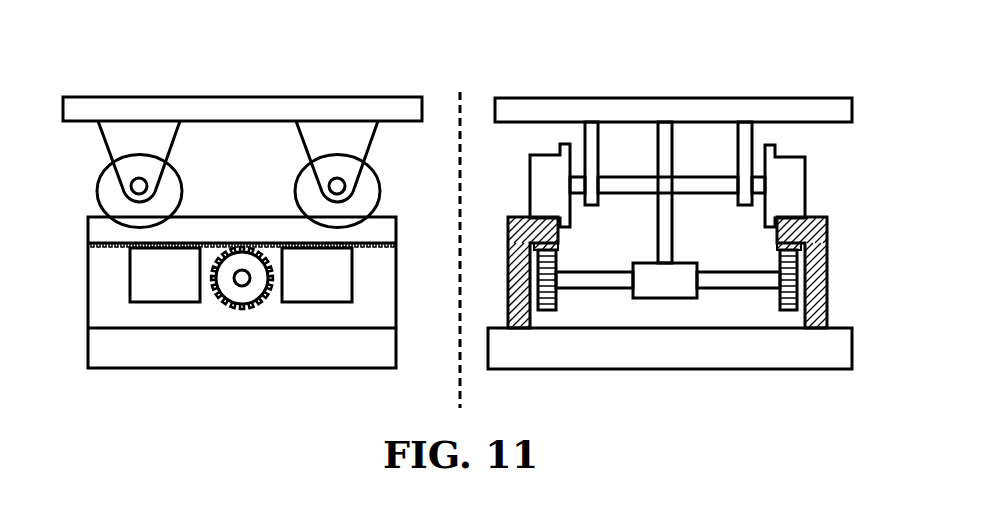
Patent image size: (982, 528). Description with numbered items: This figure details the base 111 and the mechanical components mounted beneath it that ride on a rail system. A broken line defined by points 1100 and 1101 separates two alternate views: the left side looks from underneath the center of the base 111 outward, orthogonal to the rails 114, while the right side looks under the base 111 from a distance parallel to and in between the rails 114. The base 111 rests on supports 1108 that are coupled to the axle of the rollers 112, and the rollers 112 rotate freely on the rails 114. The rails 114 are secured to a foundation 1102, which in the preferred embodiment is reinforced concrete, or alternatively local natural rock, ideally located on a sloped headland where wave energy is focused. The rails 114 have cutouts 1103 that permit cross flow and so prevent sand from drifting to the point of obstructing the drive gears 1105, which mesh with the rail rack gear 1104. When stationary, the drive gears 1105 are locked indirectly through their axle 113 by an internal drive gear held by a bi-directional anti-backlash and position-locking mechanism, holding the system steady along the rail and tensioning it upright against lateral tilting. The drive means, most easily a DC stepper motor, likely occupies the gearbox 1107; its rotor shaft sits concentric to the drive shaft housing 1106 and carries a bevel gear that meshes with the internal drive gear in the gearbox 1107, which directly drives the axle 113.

The base 111 is at (267, 98).
The broken line point 1101 is at (438, 239).
The broken line point 1100 is at (488, 408).
The supports 1108 is at (160, 151).
The rollers 112 is at (180, 168).
The rails 114 is at (392, 232).
The rail rack gear 1104 is at (393, 247).
The cutouts 1103 is at (185, 285).
The drive gears 1105 is at (250, 306).
The foundation 1102 is at (268, 360).
The drive shaft housing 1106 is at (672, 217).
The axle 113 is at (607, 272).
The gearbox 1107 is at (659, 298).